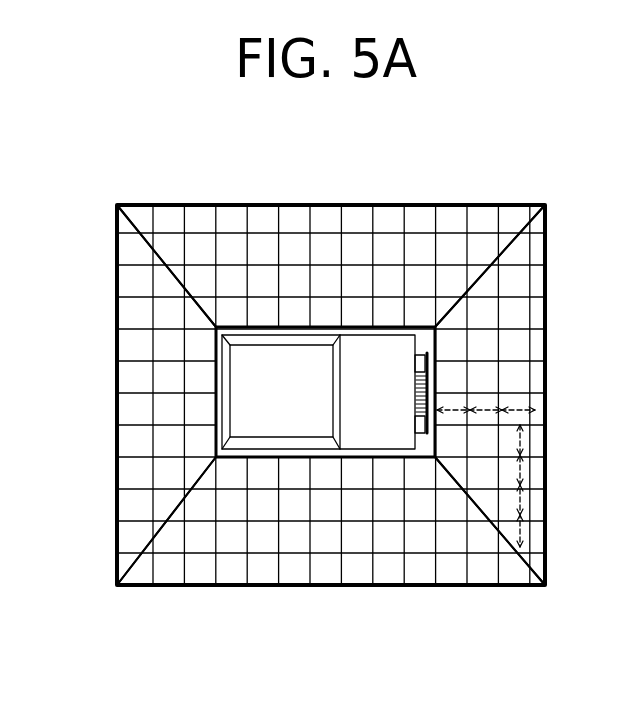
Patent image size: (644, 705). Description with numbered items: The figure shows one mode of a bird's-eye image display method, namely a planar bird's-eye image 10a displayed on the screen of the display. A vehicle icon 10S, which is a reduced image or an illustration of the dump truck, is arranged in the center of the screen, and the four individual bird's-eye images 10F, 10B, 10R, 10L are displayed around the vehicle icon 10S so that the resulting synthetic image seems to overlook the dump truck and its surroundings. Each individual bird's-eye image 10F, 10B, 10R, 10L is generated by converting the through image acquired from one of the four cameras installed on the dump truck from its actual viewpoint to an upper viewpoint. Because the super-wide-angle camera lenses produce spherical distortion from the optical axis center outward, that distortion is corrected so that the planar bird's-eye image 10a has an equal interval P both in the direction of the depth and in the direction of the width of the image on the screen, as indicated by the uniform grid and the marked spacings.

The planar bird's-eye image 10a is at (327, 204).
The individual bird's-eye image (back) 10B is at (136, 248).
The individual bird's-eye image (left) 10L is at (478, 222).
The individual bird's-eye image (front) 10F is at (513, 276).
The individual bird's-eye image (right) 10R is at (421, 572).
The vehicle icon 10S is at (272, 432).
The equal interval P is at (452, 403).